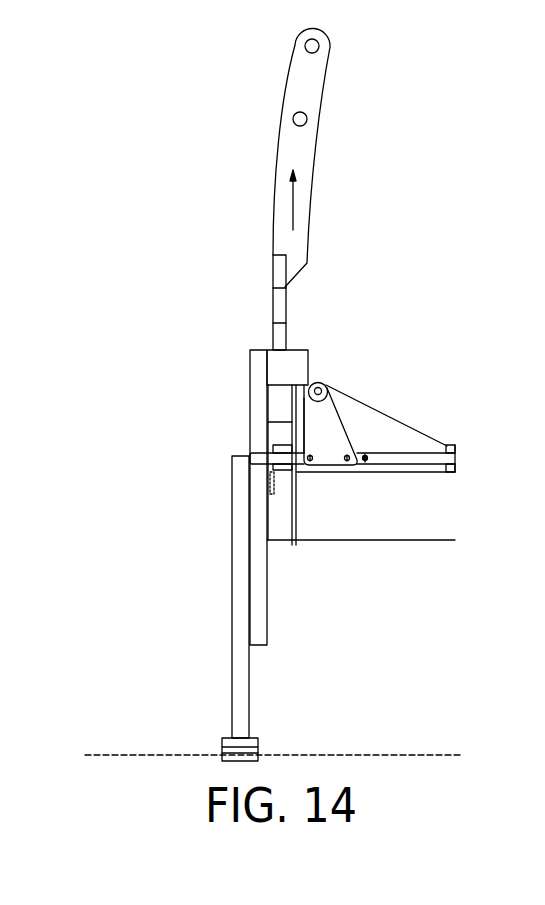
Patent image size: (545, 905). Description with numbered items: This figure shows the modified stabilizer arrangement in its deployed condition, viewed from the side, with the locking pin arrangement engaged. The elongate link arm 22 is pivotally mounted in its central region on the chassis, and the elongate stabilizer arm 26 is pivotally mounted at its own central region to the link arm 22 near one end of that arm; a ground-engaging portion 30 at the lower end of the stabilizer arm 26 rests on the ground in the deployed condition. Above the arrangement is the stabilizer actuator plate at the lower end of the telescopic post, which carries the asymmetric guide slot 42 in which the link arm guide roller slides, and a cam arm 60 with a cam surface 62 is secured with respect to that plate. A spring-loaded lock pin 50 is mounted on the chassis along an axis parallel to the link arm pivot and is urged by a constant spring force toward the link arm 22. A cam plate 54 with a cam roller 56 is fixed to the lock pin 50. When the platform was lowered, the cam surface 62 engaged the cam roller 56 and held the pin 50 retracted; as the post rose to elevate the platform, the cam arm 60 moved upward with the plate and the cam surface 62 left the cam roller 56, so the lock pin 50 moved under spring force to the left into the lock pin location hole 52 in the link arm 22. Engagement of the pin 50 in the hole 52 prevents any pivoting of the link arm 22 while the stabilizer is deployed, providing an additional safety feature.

The link arm 22 is at (262, 600).
The stabilizer arm 26 is at (232, 683).
The ground-engaging portion 30 is at (258, 752).
The guide slot 42 is at (272, 303).
The lock pin 50 is at (400, 466).
The lock pin location hole 52 is at (260, 450).
The cam plate 54 is at (328, 468).
The cam roller 56 is at (318, 383).
The cam arm 60 is at (317, 67).
The cam surface 62 is at (310, 190).